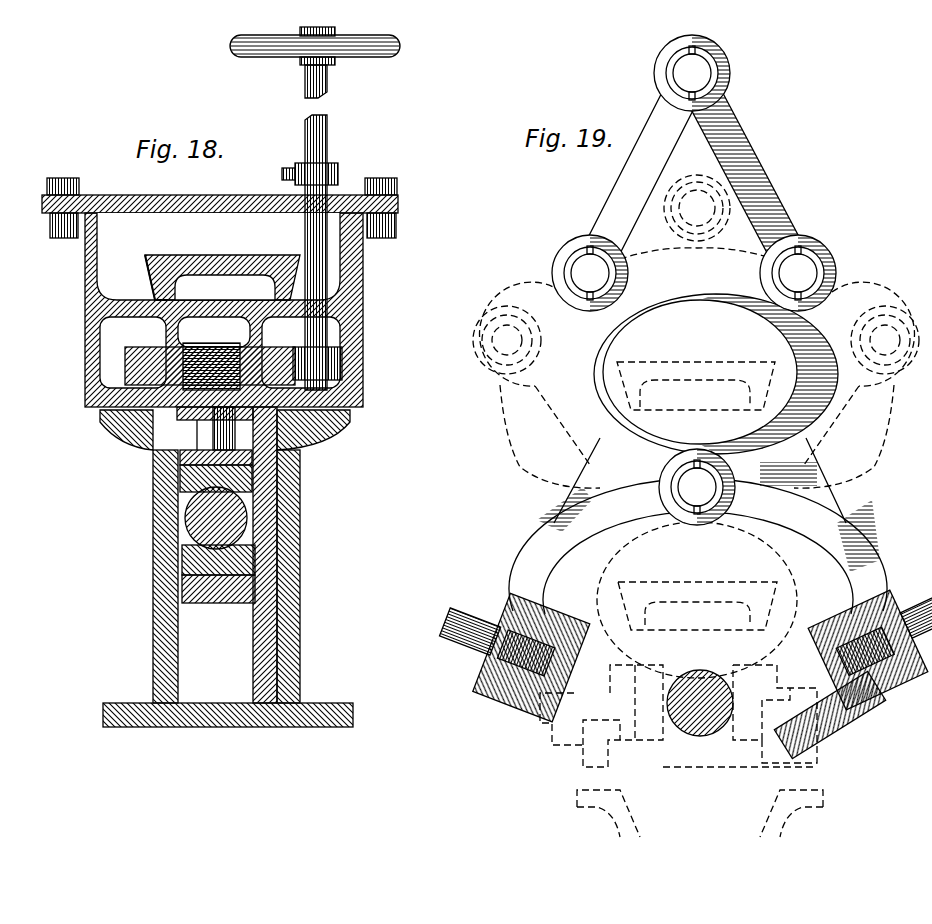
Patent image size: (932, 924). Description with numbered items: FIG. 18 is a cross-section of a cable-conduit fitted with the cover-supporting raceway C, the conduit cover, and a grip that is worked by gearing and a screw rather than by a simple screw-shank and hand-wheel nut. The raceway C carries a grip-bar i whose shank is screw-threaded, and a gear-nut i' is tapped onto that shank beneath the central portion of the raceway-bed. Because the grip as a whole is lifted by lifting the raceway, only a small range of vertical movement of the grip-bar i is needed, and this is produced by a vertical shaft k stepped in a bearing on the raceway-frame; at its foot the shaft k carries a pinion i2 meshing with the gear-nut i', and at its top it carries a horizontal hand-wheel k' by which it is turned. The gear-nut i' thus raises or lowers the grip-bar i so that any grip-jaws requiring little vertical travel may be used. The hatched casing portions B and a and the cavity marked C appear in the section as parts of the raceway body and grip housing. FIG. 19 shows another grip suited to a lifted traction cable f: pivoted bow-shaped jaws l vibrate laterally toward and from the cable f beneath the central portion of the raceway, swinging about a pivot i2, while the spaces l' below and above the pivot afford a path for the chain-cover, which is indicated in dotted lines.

In FIG. 18, the hand-wheel k' is at (325, 62).
In FIG. 18, the vertical shaft k is at (314, 252).
In FIG. 18, the valve block B is at (222, 264).
In FIG. 18, the inclined wall a is at (146, 277).
In FIG. 18, the raceway C is at (273, 314).
In FIG. 18, the gear-nut i' is at (210, 366).
In FIG. 18, the pinion i2 is at (313, 353).
In FIG. 19, the pinion i2 is at (697, 487).
In FIG. 18, the grip-bar i is at (217, 517).
In FIG. 18, the cable f is at (216, 518).
In FIG. 19, the cable f is at (700, 703).
In FIG. 19, the bow-shaped jaws l is at (686, 307).
In FIG. 19, the spaces l' is at (696, 506).